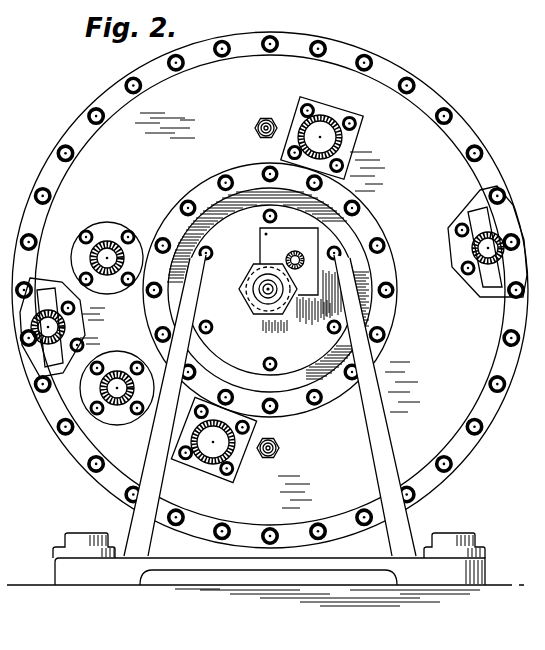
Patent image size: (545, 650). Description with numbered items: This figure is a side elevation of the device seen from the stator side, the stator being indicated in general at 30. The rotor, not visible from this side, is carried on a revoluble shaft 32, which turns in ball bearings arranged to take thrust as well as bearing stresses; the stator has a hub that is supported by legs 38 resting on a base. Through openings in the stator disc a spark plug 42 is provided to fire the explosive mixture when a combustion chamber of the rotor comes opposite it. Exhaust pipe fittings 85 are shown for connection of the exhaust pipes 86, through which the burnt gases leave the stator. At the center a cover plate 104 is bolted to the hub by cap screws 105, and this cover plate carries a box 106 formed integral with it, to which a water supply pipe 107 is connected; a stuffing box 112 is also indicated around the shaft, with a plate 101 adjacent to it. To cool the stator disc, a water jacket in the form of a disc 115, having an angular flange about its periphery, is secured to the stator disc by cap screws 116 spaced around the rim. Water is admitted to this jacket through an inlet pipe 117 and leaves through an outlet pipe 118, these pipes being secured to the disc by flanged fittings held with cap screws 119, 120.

The stator 30 is at (440, 86).
The revoluble shaft 32 is at (266, 290).
The legs 38 is at (137, 513).
The spark plug 42 is at (256, 131).
The exhaust pipe fitting 85 is at (354, 142).
The exhaust pipe 86 is at (325, 115).
The plate 101 is at (298, 243).
The cover plate 104 is at (225, 342).
The cap screws 105 is at (275, 213).
The box 106 is at (308, 292).
The water supply pipe 107 is at (295, 260).
The stuffing box 112 is at (258, 303).
The water jacket disc 115 is at (100, 446).
The cap screws 116 is at (502, 402).
The inlet pipe 117 is at (135, 412).
The outlet pipe 118 is at (106, 241).
The cap screws 119 is at (130, 362).
The cap screws 120 is at (134, 234).